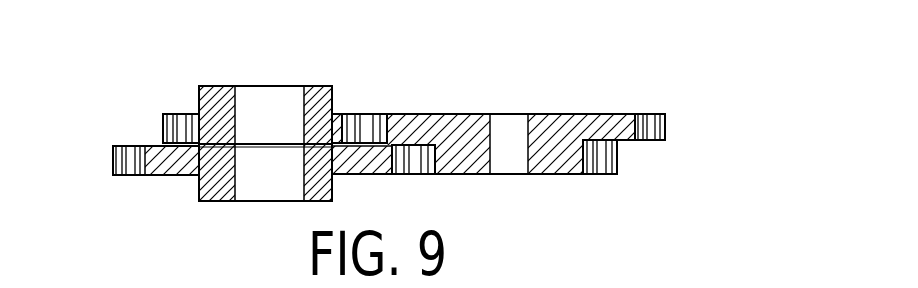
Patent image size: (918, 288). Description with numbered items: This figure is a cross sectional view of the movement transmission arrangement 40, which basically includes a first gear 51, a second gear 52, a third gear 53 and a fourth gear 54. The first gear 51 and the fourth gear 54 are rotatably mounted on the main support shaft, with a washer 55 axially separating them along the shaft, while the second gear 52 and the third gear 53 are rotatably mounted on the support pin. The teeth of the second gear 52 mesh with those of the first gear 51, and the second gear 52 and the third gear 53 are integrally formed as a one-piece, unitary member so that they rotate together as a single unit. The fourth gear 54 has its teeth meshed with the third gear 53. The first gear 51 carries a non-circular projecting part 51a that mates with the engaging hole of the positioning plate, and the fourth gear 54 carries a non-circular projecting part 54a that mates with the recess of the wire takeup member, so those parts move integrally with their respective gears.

The movement transmission arrangement 40 is at (668, 78).
The first gear 51 is at (173, 176).
The non-circular projecting part 51a is at (215, 202).
The second gear 52 is at (557, 174).
The third gear 53 is at (553, 114).
The fourth gear 54 is at (338, 114).
The non-circular projecting part 54a is at (199, 91).
The washer 55 is at (211, 211).